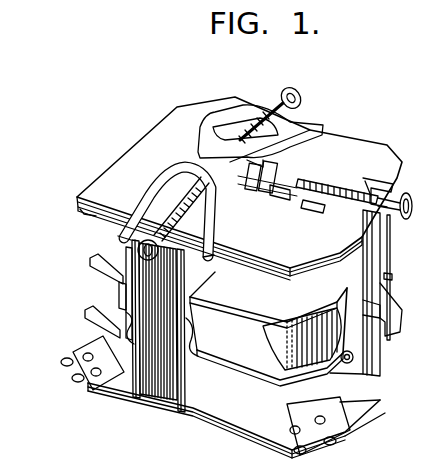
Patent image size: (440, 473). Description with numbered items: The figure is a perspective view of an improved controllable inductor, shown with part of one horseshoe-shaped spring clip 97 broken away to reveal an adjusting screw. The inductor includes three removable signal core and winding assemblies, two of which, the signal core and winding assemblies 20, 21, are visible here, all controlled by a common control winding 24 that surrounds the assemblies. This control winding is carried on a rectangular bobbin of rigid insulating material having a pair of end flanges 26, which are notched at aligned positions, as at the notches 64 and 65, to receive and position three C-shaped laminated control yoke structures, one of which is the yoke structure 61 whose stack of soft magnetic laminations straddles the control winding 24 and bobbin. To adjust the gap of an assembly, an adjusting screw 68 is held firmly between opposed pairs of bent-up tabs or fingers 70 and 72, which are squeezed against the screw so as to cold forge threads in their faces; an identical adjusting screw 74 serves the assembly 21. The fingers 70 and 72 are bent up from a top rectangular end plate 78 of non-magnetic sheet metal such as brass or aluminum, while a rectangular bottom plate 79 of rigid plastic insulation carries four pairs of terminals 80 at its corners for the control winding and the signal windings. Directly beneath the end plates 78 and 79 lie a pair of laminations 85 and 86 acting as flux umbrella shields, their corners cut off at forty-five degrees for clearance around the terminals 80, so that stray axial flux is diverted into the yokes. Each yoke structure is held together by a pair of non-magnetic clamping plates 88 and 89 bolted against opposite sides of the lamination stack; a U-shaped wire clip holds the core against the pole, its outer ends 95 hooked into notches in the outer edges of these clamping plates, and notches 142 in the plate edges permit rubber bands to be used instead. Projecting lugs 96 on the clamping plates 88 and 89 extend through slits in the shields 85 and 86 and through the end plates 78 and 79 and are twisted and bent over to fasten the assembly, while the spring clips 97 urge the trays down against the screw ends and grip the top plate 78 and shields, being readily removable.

The signal core and winding assembly 20 is at (287, 162).
The signal core and winding assembly 21 is at (228, 188).
The common control winding 24 is at (120, 292).
The end flanges 26 is at (90, 260).
The C-shaped laminated control yoke structure 61 is at (163, 393).
The notch 64 is at (338, 273).
The notch 65 is at (200, 296).
The adjusting screw 68 is at (413, 205).
The bent-up tabs or fingers 70 is at (282, 192).
The bent-up tabs or fingers 72 is at (367, 180).
The adjusting screw 74 is at (138, 248).
The top rectangular end plate 78 is at (90, 188).
The bottom plate 79 is at (287, 433).
The terminals 80 is at (70, 380).
The lamination shield 85 is at (95, 224).
The lamination shield 86 is at (82, 214).
The clamping plate 88 is at (133, 398).
The clamping plate 89 is at (180, 413).
The outer ends of wire clip 95 is at (140, 319).
The projecting lugs 96 is at (162, 194).
The horseshoe-shaped spring clip 97 is at (235, 108).
The notches 142 is at (383, 345).